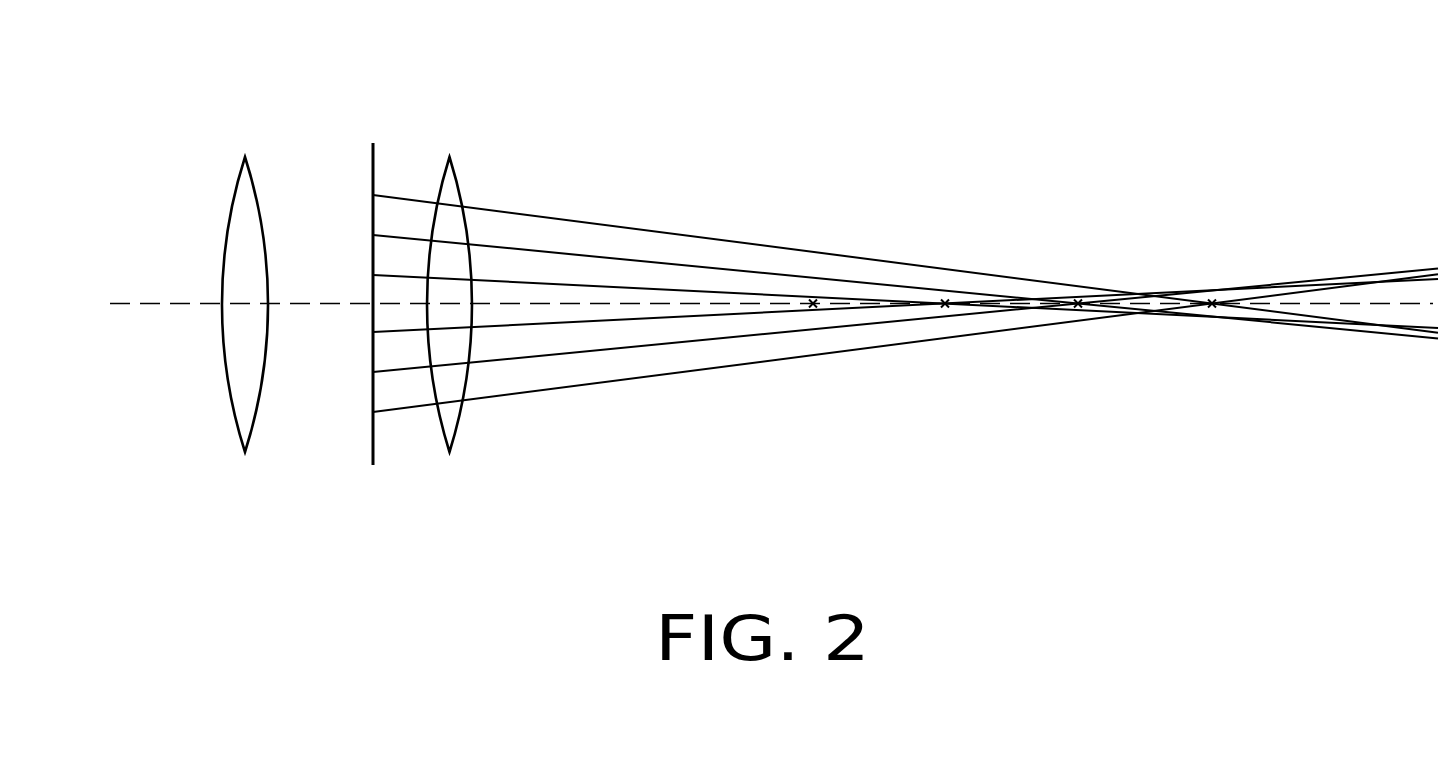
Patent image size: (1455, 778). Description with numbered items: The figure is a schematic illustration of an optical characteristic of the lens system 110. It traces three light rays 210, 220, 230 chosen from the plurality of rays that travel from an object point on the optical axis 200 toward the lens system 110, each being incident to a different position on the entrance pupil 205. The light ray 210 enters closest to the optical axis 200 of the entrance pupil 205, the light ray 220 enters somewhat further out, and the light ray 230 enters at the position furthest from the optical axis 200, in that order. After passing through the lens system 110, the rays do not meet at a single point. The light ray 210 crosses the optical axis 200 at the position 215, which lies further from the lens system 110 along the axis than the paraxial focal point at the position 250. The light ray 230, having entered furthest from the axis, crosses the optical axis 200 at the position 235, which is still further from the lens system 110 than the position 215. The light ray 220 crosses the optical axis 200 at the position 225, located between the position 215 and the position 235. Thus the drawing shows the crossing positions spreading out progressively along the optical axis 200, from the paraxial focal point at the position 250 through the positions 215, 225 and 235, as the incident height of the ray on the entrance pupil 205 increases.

The lens system 110 is at (347, 275).
The optical axis 200 is at (141, 302).
The entrance pupil 205 is at (373, 443).
The light ray 210 is at (507, 281).
The light ray 220 is at (587, 255).
The light ray 230 is at (684, 235).
The paraxial focal point position 250 is at (813, 300).
The crossing position of light ray 210 215 is at (945, 300).
The crossing position of light ray 220 225 is at (1078, 300).
The crossing position of light ray 230 235 is at (1212, 300).